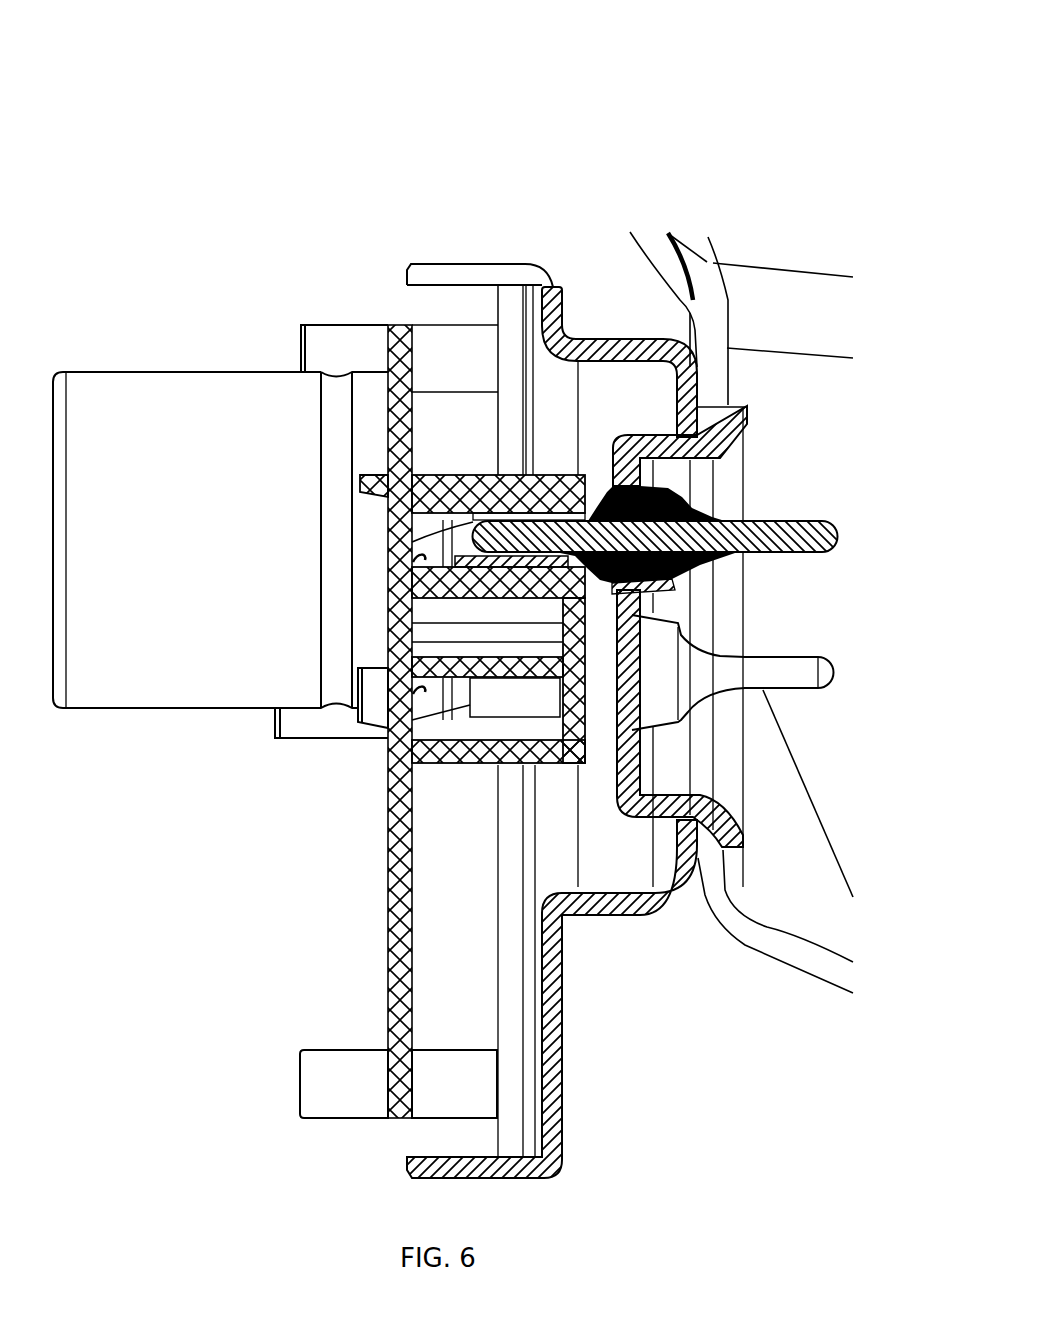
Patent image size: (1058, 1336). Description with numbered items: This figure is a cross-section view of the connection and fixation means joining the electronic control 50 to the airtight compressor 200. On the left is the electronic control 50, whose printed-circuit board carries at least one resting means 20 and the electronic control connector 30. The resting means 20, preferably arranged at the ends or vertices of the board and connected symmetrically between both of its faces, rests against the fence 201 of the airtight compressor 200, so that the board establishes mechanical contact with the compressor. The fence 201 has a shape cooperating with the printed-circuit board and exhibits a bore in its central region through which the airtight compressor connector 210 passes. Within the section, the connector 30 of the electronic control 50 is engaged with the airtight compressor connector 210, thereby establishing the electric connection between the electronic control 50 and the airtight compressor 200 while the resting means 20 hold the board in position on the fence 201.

The resting means 20 is at (433, 347).
The connector 30 is at (485, 487).
The electronic control 50 is at (290, 827).
The airtight compressor 200 is at (782, 242).
The fence 201 is at (597, 925).
The airtight compressor connector 210 is at (630, 440).